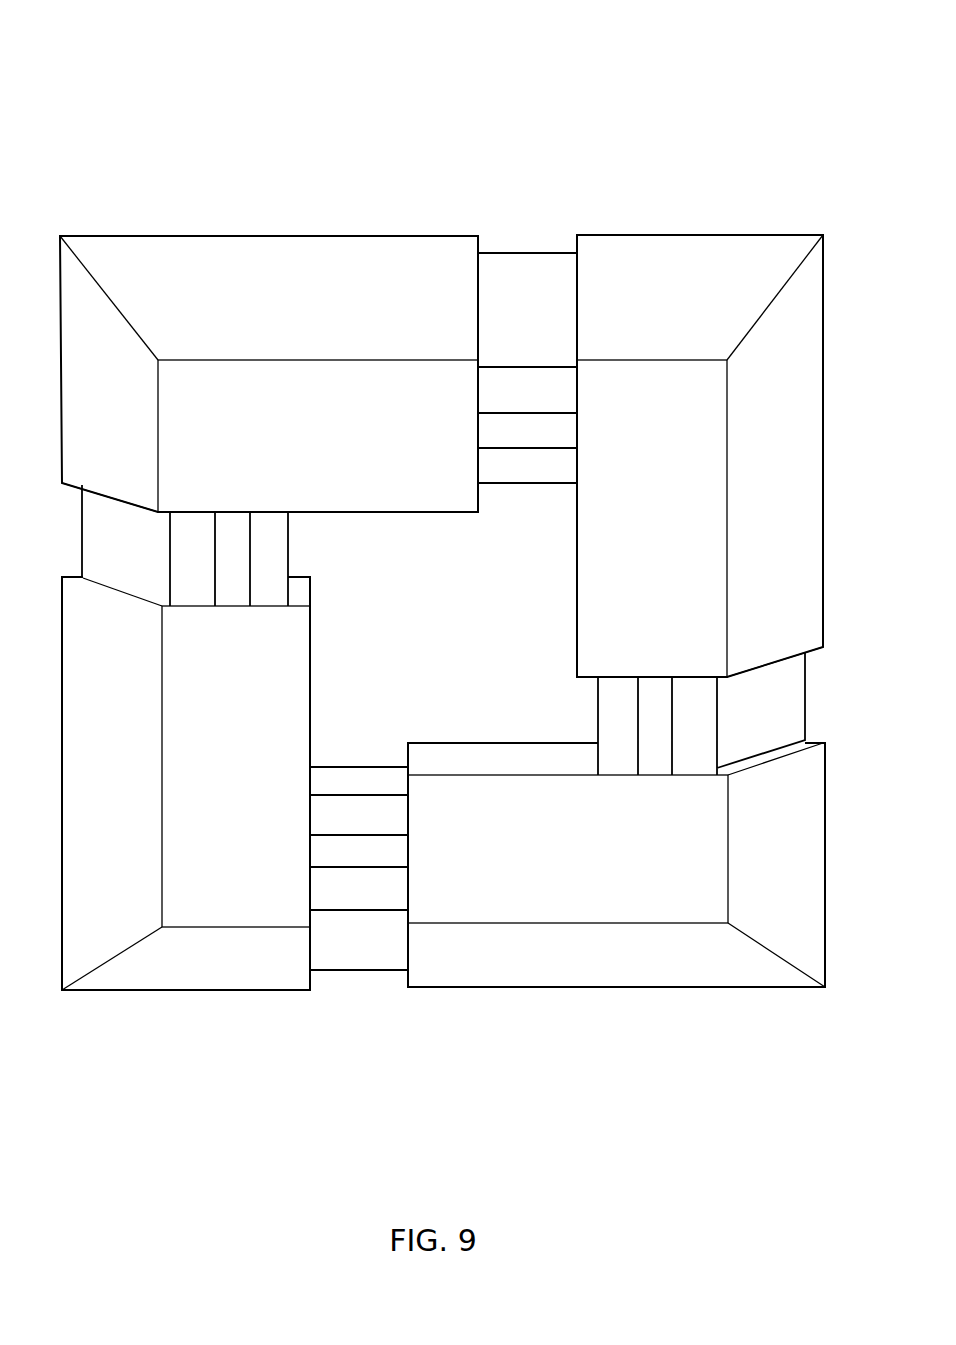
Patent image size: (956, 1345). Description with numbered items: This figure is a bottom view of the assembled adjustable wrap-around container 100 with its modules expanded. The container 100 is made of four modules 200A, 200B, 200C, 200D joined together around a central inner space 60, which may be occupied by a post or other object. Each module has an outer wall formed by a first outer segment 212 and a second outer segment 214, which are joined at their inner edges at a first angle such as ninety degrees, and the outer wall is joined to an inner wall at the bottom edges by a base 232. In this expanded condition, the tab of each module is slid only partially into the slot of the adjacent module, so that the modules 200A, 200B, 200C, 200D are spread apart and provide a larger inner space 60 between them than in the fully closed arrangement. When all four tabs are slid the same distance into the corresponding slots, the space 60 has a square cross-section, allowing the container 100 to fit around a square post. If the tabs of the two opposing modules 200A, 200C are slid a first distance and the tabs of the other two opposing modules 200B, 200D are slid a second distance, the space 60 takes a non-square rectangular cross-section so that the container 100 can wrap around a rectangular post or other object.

The adjustable wrap-around container 100 is at (491, 148).
The inner space 60 is at (470, 596).
The first module 200A is at (217, 238).
The second module 200B is at (683, 235).
The third module 200C is at (648, 983).
The fourth module 200D is at (212, 985).
The first outer segment 212 is at (442, 612).
The second outer segment 214 is at (442, 632).
The base 232 is at (443, 643).